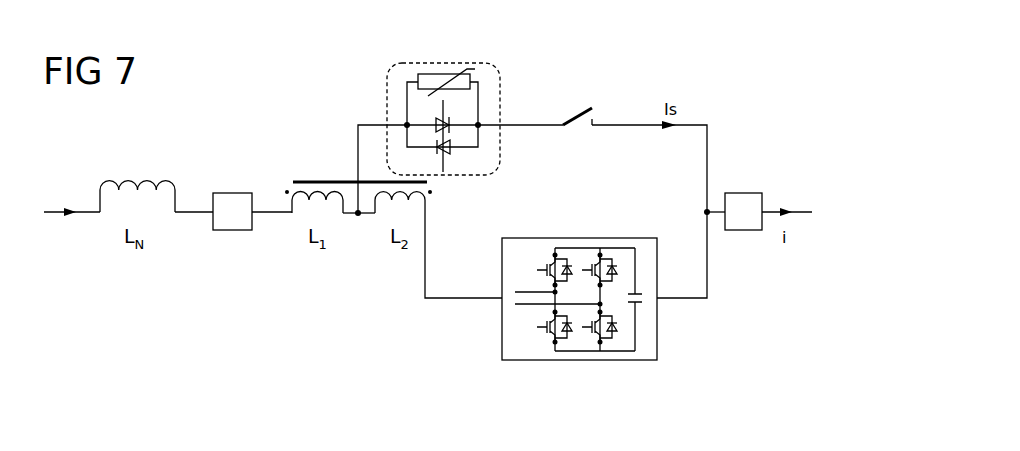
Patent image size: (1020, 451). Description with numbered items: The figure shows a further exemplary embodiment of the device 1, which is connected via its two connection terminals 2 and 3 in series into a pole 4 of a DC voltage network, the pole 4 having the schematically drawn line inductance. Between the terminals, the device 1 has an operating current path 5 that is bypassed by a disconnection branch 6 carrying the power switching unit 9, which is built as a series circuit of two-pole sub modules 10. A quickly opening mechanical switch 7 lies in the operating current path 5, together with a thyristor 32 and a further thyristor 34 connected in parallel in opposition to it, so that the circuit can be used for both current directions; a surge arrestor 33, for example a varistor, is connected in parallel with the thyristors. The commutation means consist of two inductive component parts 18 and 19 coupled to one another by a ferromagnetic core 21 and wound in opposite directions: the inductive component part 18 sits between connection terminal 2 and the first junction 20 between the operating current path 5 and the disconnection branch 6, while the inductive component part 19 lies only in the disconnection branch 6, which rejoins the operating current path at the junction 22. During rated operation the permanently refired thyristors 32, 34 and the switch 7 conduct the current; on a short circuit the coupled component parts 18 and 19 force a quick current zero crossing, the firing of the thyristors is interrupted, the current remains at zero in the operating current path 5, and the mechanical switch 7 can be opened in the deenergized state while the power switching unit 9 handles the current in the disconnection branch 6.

The device 1 is at (785, 115).
The connection terminal 2 is at (232, 193).
The connection terminal 3 is at (742, 193).
The pole 4 is at (50, 212).
The operating current path 5 is at (464, 93).
The disconnection branch 6 is at (463, 300).
The mechanical switch 7 is at (570, 110).
The power switching unit 9 is at (542, 362).
The sub module 10 is at (645, 365).
The inductive component part 18 is at (280, 178).
The inductive component part 19 is at (445, 210).
The first junction 20 is at (358, 218).
The core 21 is at (330, 181).
The junction 22 is at (705, 212).
The thyristor 32 is at (441, 151).
The surge arrestor 33 is at (428, 74).
The further thyristor 34 is at (449, 117).